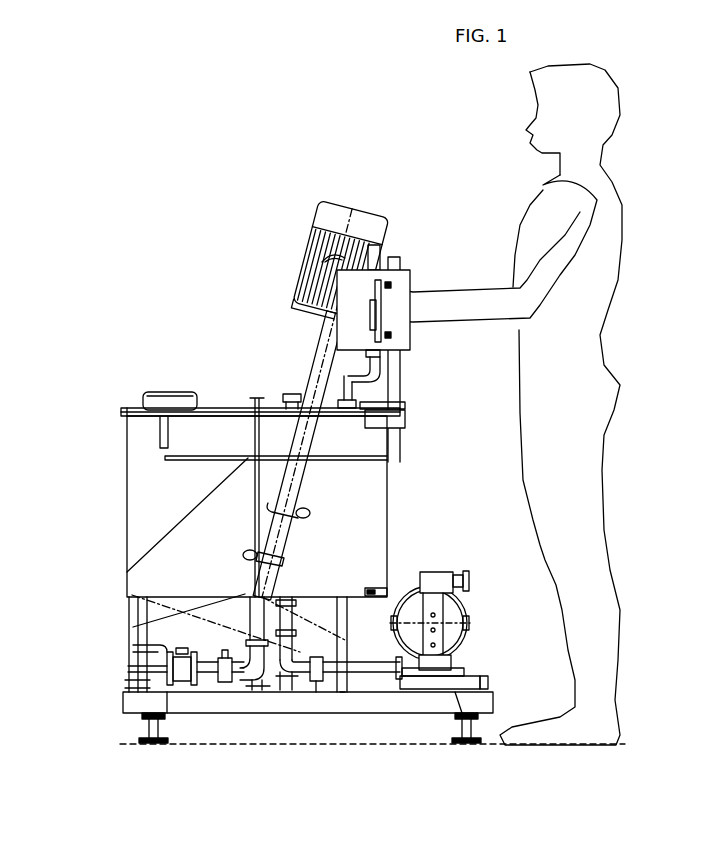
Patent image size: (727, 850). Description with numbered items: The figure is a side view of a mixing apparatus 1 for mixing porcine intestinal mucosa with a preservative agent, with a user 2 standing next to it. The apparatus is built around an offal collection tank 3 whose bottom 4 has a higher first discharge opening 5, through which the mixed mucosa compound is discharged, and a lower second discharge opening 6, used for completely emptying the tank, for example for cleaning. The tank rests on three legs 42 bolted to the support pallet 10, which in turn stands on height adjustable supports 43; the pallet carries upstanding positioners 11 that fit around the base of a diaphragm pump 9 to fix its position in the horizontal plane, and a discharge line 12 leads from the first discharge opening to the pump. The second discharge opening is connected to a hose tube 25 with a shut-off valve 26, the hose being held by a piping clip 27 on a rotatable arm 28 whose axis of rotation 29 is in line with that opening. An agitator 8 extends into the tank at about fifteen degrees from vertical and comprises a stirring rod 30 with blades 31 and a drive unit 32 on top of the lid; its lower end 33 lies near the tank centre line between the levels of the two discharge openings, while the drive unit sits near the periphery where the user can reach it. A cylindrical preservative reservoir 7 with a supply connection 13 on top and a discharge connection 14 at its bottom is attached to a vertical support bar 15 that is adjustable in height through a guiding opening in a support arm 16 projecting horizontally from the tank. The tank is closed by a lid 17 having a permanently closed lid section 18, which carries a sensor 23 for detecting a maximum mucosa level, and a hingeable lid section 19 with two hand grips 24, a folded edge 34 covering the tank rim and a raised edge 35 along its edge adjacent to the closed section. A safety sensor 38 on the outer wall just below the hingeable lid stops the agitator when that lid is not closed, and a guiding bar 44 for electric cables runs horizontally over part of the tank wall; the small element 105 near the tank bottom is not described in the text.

The mixing apparatus 1 is at (85, 316).
The user 2 is at (598, 172).
The offal collection tank 3 is at (152, 533).
The bottom 4 is at (190, 603).
The first discharge opening 5 is at (352, 680).
The second discharge opening 6 is at (222, 674).
The preservative reservoir 7 is at (411, 268).
The agitator 8 is at (317, 345).
The diaphragm pump 9 is at (448, 614).
The support pallet 10 is at (140, 705).
The positioners 11 is at (482, 678).
The discharge line 12 is at (400, 688).
The supply connection 13 is at (330, 257).
The discharge connection 14 is at (380, 371).
The vertical support bar 15 is at (395, 363).
The support arm 16 is at (385, 418).
The lid 17 is at (133, 405).
The permanently closed lid section 18 is at (380, 404).
The hingeable lid section 19 is at (123, 413).
The sensor 23 is at (290, 393).
The hand grips 24 is at (173, 390).
The hose tube 25 is at (228, 648).
The shut-off valve 26 is at (145, 650).
The piping clip 27 is at (232, 682).
The rotatable arm 28 is at (255, 690).
The axis of rotation 29 is at (290, 680).
The stirring rod 30 is at (292, 486).
The blades 31 is at (283, 560).
The drive unit 32 is at (317, 230).
The lower end 33 is at (133, 627).
The folded edge 34 is at (160, 420).
The raised edge 35 is at (256, 400).
The sensor 38 is at (158, 460).
The legs 42 is at (125, 680).
The height adjustable supports 43 is at (143, 733).
The guiding bar 44 is at (127, 572).
The sensor 105 is at (378, 590).